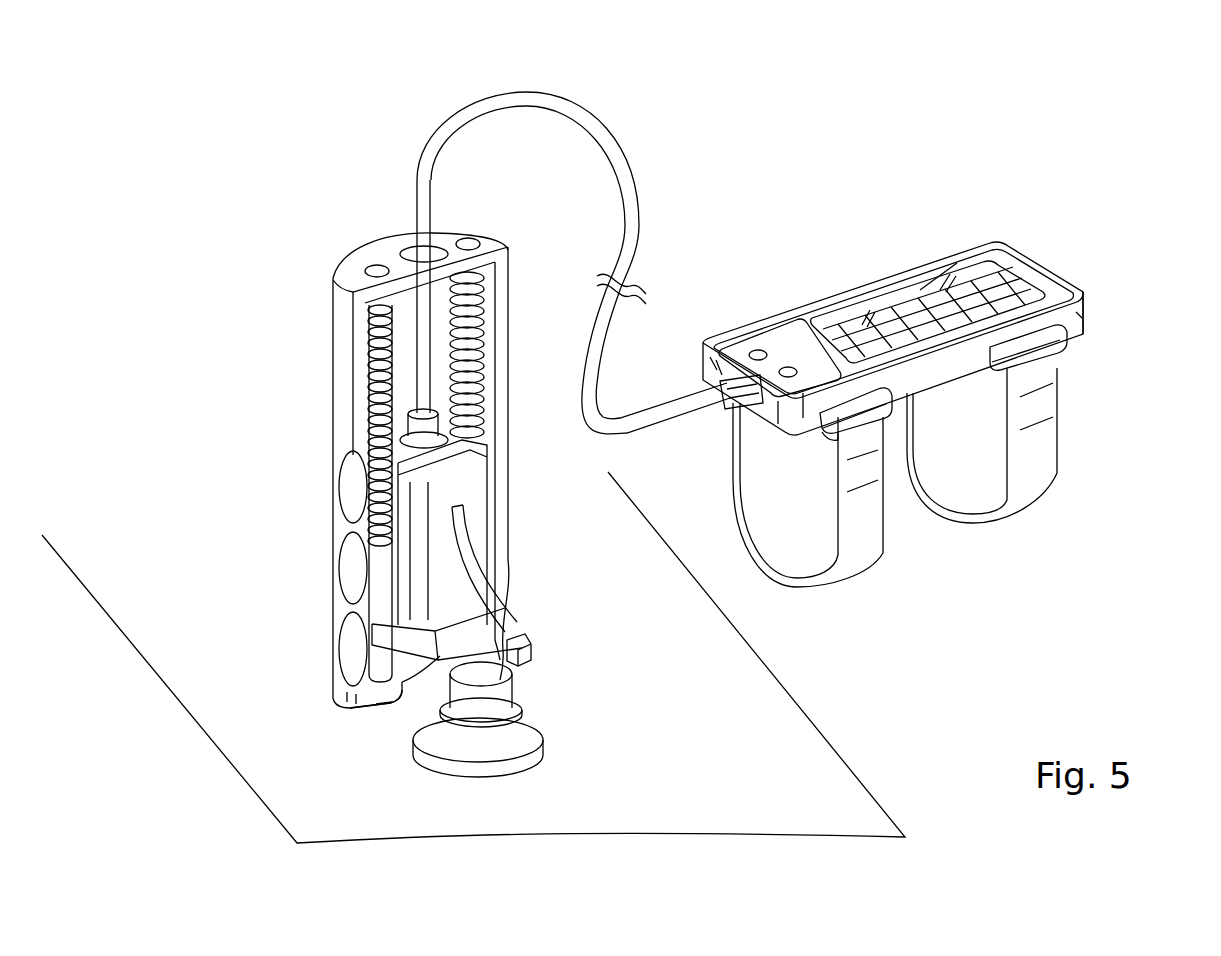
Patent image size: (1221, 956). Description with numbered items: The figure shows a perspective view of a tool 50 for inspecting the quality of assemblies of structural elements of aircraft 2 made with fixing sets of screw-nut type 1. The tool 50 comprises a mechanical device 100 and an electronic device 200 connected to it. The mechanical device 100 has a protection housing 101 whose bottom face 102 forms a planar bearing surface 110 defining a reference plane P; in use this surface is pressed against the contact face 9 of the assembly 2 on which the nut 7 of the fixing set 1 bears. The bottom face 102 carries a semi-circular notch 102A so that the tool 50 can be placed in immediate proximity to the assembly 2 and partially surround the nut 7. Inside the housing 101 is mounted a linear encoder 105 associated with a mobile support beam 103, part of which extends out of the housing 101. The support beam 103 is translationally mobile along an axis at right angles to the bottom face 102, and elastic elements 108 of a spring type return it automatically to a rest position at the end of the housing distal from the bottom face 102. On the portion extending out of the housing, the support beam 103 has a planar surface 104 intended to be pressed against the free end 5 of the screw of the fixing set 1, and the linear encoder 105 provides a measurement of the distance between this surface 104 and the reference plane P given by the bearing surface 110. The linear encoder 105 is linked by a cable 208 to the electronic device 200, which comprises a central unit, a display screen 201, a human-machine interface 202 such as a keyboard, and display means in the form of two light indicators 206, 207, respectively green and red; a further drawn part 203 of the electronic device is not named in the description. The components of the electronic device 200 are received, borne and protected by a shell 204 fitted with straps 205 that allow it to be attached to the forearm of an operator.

The fixing set of screw-nut type 1 is at (582, 778).
The assembly of structural elements of aircraft 2 is at (478, 704).
The free end of the screw 5 is at (486, 673).
The nut 7 is at (520, 745).
The contact face 9 is at (478, 657).
The reference plane P is at (805, 798).
The tool 50 is at (702, 408).
The mechanical device 100 is at (434, 444).
The protection housing 101 is at (340, 335).
The bottom face 102 is at (372, 705).
The semi-circular notch 102A is at (414, 663).
The mobile support beam 103 is at (518, 634).
The planar surface 104 is at (523, 674).
The linear encoder 105 is at (388, 499).
The elastic elements 108 is at (373, 406).
The planar bearing surface 110 is at (385, 718).
The electronic device 200 is at (934, 348).
The display screen 201 is at (975, 254).
The human-machine interface 202 is at (1017, 292).
The button panel 203 is at (738, 350).
The shell 204 is at (1090, 303).
The straps 205 is at (867, 518).
The light indicator 206 is at (759, 350).
The light indicator 207 is at (790, 368).
The cable 208 is at (607, 118).